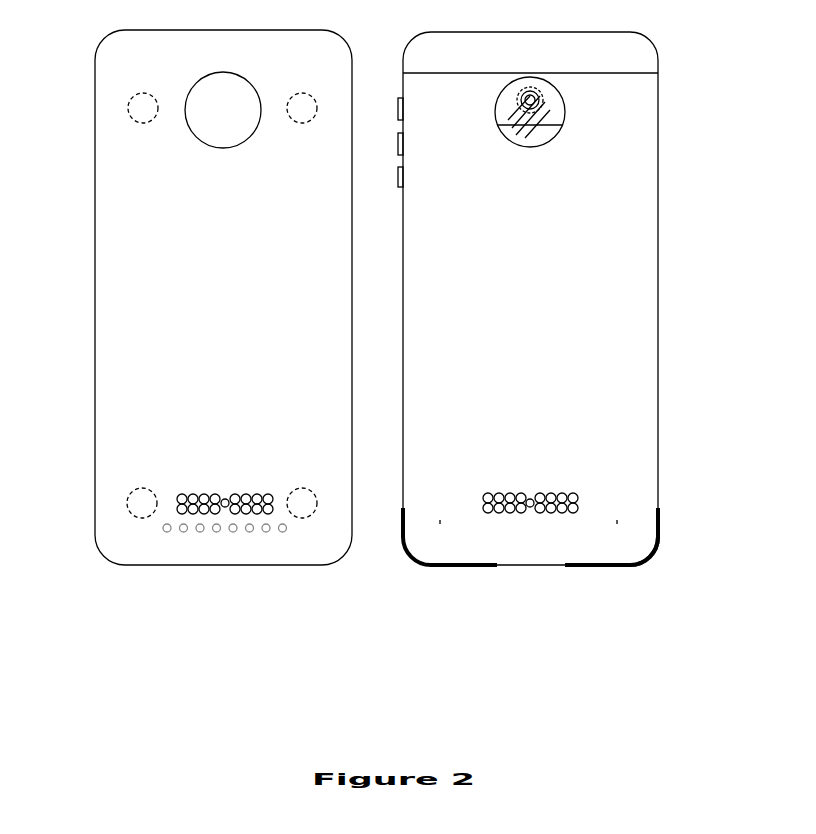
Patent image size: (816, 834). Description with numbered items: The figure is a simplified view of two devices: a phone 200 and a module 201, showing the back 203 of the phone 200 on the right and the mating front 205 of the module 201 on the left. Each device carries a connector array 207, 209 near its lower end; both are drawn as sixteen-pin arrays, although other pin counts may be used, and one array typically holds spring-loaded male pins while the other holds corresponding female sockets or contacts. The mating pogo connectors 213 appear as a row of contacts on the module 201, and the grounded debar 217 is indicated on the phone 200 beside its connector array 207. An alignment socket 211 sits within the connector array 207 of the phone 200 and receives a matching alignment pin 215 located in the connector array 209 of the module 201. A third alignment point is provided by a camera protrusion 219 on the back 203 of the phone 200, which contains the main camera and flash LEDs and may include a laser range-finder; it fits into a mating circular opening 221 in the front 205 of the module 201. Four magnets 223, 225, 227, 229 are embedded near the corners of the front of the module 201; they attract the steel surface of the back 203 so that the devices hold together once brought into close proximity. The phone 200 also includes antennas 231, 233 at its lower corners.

The phone 200 is at (557, 334).
The module 201 is at (196, 332).
The back of the phone 203 is at (642, 342).
The mating front of the module 205 is at (113, 340).
The connector array 207 is at (548, 482).
The connector array 209 is at (233, 492).
The alignment socket 211 is at (526, 498).
The mating pogo connectors 213 is at (163, 522).
The alignment pin 215 is at (225, 507).
The grounded debar 217 is at (590, 518).
The camera protrusion 219 is at (555, 135).
The circular opening 221 is at (233, 147).
The magnet 223 is at (140, 492).
The magnet 225 is at (298, 492).
The magnet 227 is at (137, 100).
The magnet 229 is at (297, 100).
The antenna 231 is at (430, 566).
The antenna 233 is at (645, 566).